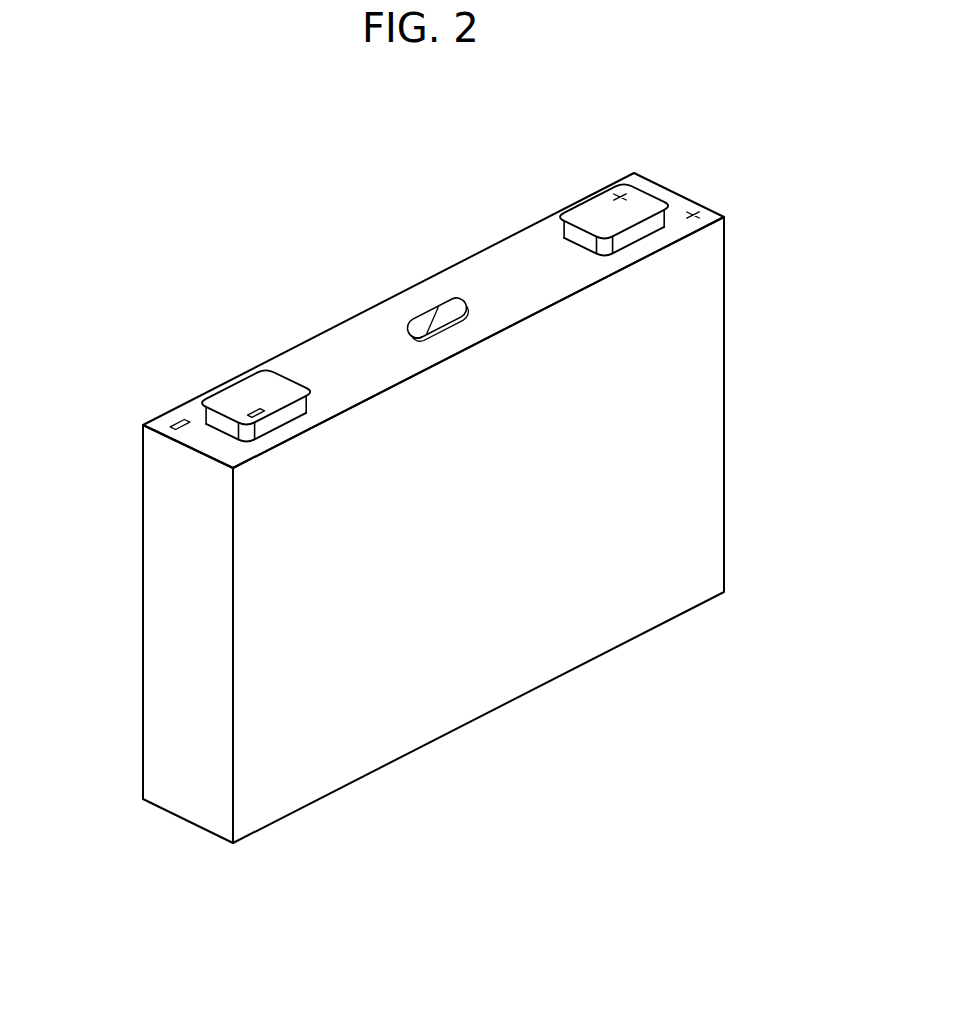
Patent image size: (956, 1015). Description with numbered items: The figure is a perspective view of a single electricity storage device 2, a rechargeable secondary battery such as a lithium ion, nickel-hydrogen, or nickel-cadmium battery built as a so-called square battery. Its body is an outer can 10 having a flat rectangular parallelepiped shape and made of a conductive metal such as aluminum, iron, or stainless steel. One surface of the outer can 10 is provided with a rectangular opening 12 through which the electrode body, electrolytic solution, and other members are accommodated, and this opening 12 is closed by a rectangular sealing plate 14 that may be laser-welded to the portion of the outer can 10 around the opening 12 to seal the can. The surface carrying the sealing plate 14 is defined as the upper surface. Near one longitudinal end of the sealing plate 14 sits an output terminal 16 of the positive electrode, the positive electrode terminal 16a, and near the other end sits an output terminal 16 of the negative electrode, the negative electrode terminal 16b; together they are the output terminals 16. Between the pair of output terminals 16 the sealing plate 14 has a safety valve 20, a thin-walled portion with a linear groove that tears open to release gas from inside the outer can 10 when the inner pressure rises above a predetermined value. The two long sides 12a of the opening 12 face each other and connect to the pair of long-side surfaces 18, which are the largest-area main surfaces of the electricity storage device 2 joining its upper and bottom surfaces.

The electricity storage device 2 is at (513, 847).
The outer can 10 is at (700, 603).
The opening 12 is at (663, 182).
The long side of opening 12a is at (452, 268).
The sealing plate 14 is at (348, 338).
The output terminal 16 is at (425, 278).
The positive electrode terminal 16a is at (598, 211).
The negative electrode terminal 16b is at (235, 391).
The long-side surface 18 is at (690, 502).
The safety valve 20 is at (417, 318).